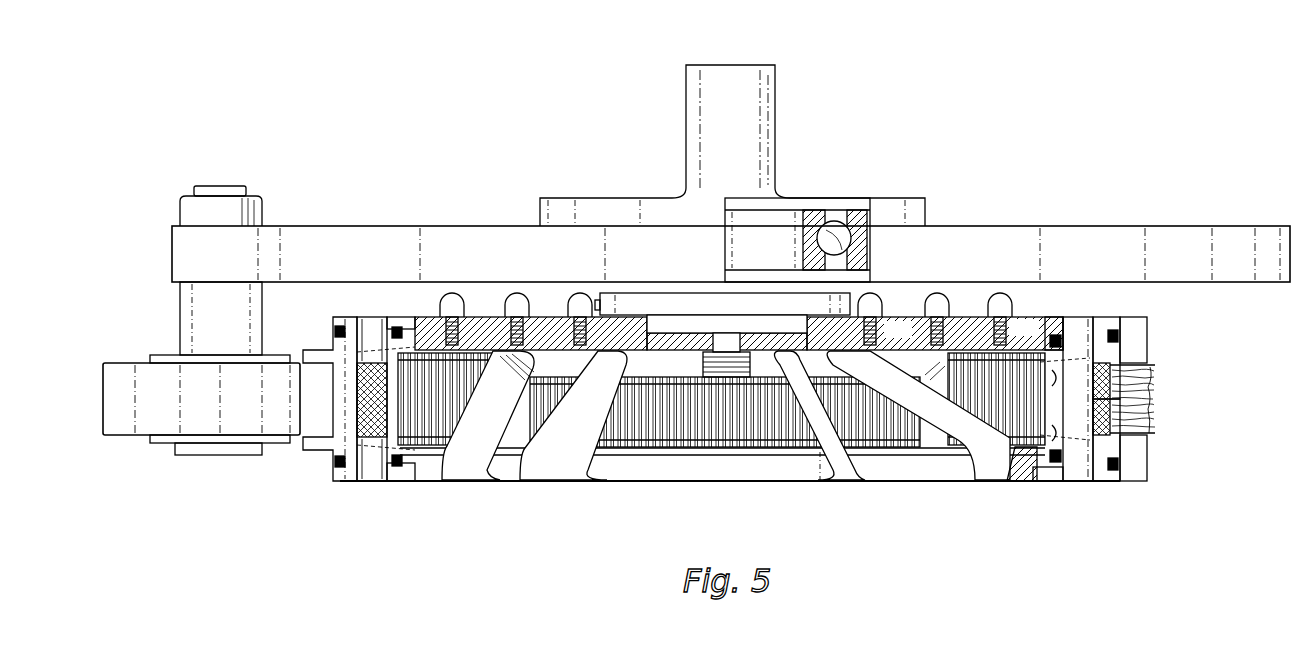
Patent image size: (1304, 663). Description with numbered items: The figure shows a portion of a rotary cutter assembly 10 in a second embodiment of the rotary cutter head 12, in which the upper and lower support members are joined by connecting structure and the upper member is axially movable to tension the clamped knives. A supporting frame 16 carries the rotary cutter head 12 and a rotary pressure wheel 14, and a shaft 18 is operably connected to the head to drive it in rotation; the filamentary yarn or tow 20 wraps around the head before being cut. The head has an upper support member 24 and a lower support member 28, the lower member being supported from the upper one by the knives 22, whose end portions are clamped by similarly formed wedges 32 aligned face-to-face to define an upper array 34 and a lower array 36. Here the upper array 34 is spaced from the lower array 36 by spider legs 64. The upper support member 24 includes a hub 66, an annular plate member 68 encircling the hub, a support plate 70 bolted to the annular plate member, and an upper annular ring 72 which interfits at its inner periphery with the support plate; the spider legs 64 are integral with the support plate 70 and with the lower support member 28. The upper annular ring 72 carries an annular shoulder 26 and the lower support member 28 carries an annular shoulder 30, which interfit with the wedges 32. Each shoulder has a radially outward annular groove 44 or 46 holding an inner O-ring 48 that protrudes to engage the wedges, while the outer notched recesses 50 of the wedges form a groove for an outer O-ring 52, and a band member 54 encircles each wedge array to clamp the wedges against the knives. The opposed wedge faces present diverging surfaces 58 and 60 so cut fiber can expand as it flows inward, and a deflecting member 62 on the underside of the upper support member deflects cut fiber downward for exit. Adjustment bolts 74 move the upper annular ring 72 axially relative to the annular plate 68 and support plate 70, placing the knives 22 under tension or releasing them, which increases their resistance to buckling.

The rotary cutter assembly 10 is at (388, 188).
The rotary cutter head 12 is at (491, 490).
The rotary pressure wheel 14 is at (96, 367).
The supporting frame 16 is at (425, 226).
The shaft 18 is at (773, 128).
The filamentary yarn or tow 20 is at (1151, 413).
The knives 22 is at (745, 415).
The upper support member 24 is at (1028, 298).
The annular shoulder 26 is at (1058, 336).
The lower support member 28 is at (1013, 483).
The annular shoulder 30 is at (1047, 470).
The wedges 32 is at (1192, 348).
The upper array 34 is at (1096, 317).
The lower array 36 is at (1108, 484).
The annular groove 44 is at (435, 317).
The annular groove 46 is at (403, 468).
The O-ring 48 is at (395, 326).
The outer notched recess 50 is at (340, 325).
The O-ring 52 is at (334, 337).
The band member 54 is at (1120, 340).
The diverging surface 58 is at (1052, 372).
The diverging surface 60 is at (1051, 433).
The deflecting member 62 is at (942, 372).
The spider legs 64 is at (610, 440).
The hub 66 is at (739, 310).
The annular plate member 68 is at (562, 312).
The support plate 70 is at (909, 338).
The upper annular ring 72 is at (1033, 336).
The adjustment bolts 74 is at (447, 301).